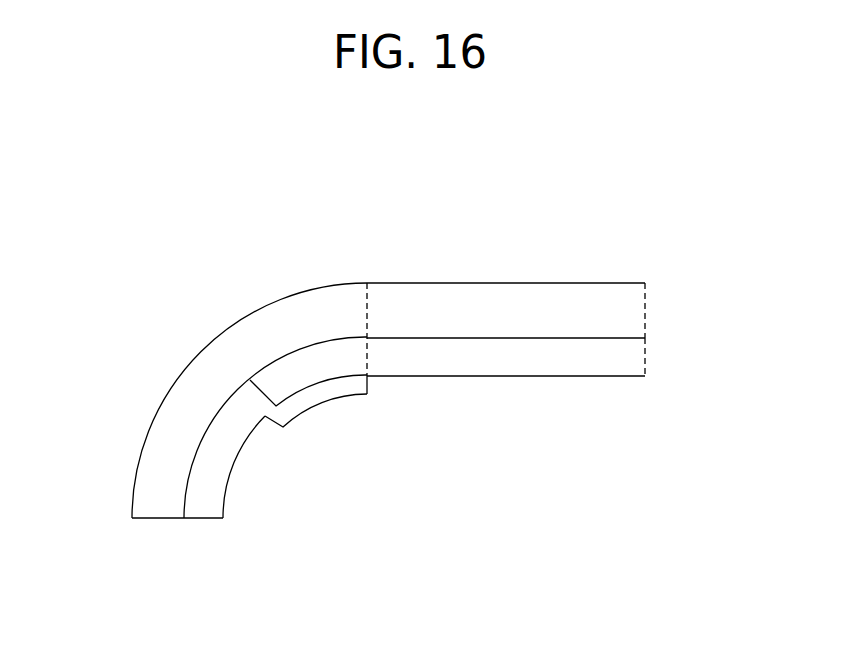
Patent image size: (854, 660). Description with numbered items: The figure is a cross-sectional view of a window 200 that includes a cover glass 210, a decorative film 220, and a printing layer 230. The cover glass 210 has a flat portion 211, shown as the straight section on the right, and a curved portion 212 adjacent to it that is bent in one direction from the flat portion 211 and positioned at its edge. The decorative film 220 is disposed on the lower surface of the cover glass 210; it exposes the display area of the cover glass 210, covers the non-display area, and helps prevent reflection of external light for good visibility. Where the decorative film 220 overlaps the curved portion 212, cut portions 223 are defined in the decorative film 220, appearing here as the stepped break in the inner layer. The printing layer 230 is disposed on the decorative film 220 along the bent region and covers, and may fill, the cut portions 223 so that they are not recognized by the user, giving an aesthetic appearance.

The window 200 is at (374, 371).
The cover glass 210 is at (388, 353).
The flat portion 211 is at (396, 294).
The curved portion 212 is at (343, 294).
The decorative film 220 is at (583, 370).
The cut portions 223 is at (230, 458).
The printing layer 230 is at (205, 510).